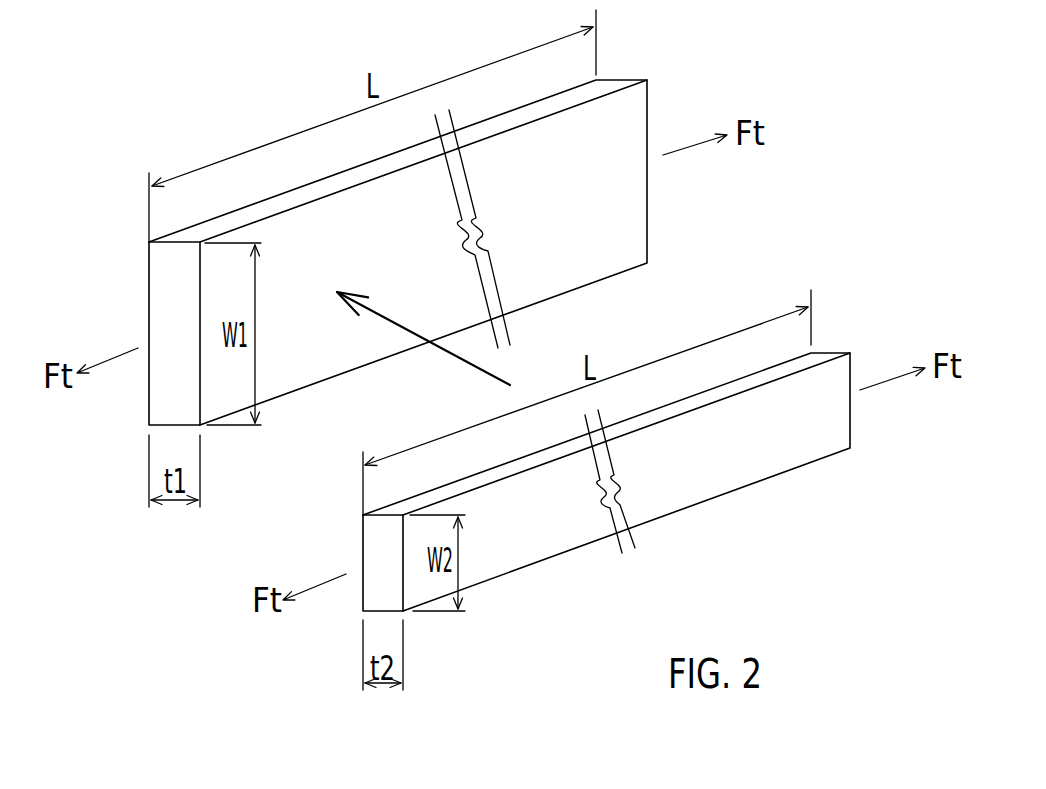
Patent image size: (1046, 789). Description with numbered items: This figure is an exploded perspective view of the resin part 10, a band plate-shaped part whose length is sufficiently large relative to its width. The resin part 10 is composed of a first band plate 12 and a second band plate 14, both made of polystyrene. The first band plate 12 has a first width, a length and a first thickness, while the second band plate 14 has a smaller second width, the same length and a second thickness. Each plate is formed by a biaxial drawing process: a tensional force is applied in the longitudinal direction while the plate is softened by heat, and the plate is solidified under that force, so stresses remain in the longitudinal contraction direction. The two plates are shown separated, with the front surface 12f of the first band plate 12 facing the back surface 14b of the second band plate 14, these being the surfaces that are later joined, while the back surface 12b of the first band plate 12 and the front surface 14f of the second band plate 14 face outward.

The resin part 10 is at (486, 334).
The first band plate 12 is at (399, 241).
The front surface of the first band plate 12f is at (613, 148).
The end face of first bar 12b is at (148, 296).
The second band plate 14 is at (563, 482).
The front face of second bar 14f is at (687, 473).
The back surface of the second band plate 14b is at (360, 540).